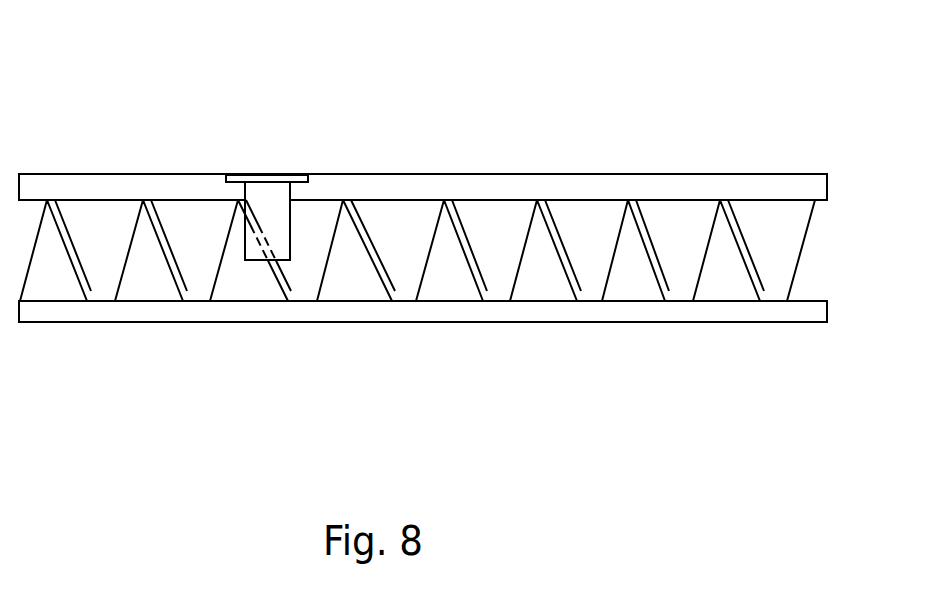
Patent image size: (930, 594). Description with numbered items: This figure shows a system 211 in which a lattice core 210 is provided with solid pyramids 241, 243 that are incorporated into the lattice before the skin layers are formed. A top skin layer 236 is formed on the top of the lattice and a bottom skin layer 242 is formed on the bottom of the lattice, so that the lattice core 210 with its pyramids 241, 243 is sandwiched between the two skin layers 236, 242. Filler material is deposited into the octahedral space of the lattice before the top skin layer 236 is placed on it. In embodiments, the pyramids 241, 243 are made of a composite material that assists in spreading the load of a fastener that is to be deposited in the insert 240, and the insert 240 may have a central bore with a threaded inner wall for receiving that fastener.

The system 211 is at (423, 226).
The lattice core 210 is at (423, 226).
The top skin layer 236 is at (431, 182).
The bottom skin layer 242 is at (433, 309).
The solid pyramid 243 is at (252, 283).
The insert 240 is at (258, 174).
The solid pyramid 241 is at (303, 215).